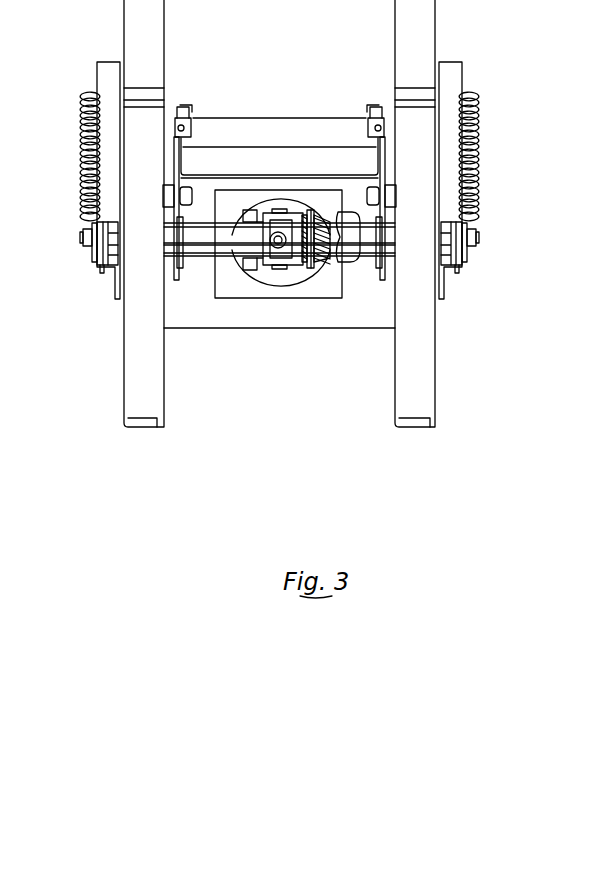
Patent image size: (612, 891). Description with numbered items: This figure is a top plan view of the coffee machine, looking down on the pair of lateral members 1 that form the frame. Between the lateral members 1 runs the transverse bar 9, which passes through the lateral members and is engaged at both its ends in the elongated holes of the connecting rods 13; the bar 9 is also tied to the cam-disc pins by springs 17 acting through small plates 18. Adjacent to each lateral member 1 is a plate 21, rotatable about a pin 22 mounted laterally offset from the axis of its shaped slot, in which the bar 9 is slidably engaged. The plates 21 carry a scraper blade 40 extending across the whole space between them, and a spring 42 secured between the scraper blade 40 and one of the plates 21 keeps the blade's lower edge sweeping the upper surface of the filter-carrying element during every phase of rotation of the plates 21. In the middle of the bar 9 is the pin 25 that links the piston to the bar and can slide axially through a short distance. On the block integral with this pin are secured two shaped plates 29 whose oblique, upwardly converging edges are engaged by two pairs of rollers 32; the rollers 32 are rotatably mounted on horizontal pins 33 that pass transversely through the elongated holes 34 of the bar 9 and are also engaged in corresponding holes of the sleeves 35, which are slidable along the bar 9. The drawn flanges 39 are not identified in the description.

The lateral member 1 is at (148, 37).
The transverse bar 9 is at (324, 220).
The connecting rod 13 is at (110, 118).
The spring 17 is at (84, 150).
The small plate 18 is at (97, 246).
The plate 21 is at (176, 222).
The pin 22 is at (163, 190).
The pin 25 is at (278, 248).
The shaped plate 29 is at (262, 208).
The roller 32 is at (248, 208).
The pin 33 is at (312, 268).
The elongated hole 34 is at (350, 255).
The sleeve 35 is at (336, 222).
The flange 39 is at (242, 265).
The scraper blade 40 is at (317, 127).
The spring 42 is at (197, 106).